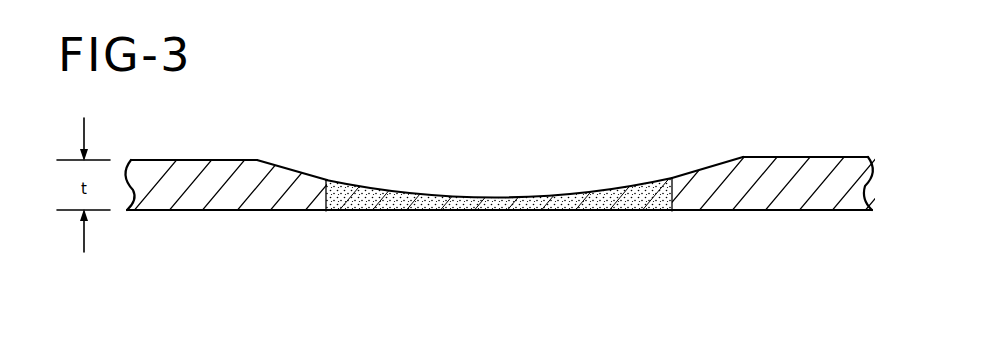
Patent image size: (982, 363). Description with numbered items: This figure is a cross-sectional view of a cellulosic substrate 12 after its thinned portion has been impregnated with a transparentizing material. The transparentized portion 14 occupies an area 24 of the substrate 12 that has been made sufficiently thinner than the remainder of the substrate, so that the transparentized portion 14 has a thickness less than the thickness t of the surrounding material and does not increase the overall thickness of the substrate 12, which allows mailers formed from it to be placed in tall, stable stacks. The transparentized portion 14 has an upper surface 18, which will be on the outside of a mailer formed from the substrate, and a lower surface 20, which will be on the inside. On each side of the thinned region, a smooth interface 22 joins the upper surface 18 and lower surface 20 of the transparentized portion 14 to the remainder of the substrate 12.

The substrate 12 is at (677, 121).
The transparentized portion 14 is at (543, 198).
The upper surface 18 is at (443, 197).
The lower surface 20 is at (488, 211).
The smooth interface 22 is at (300, 172).
The area 24 is at (672, 260).